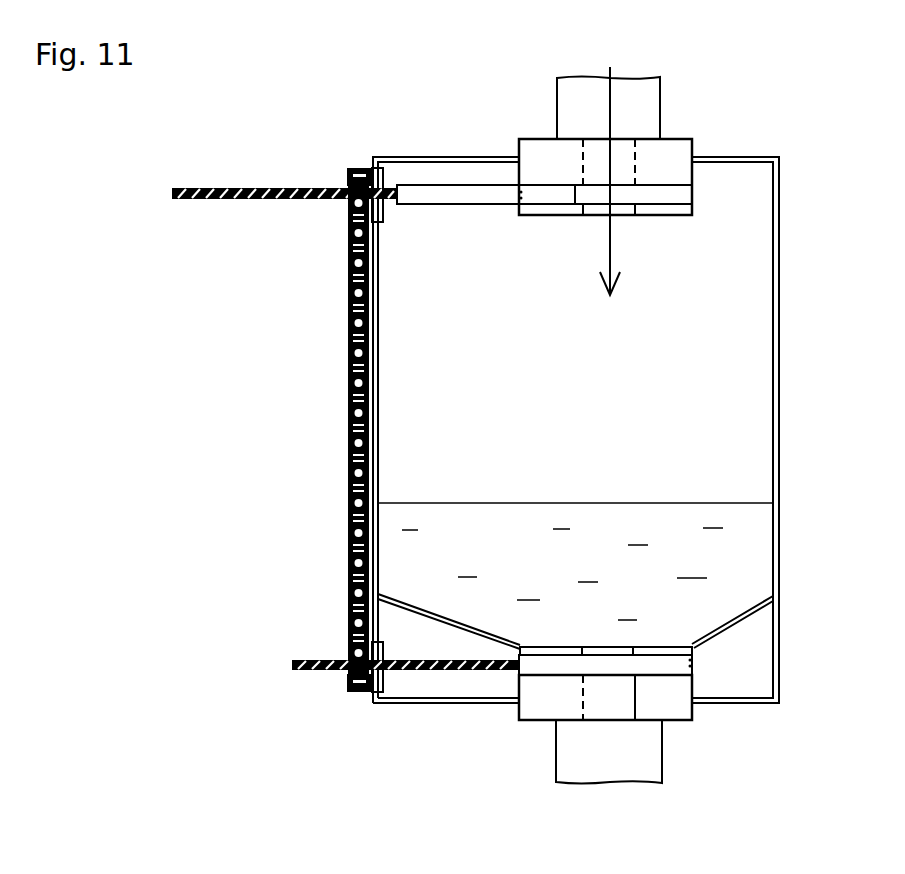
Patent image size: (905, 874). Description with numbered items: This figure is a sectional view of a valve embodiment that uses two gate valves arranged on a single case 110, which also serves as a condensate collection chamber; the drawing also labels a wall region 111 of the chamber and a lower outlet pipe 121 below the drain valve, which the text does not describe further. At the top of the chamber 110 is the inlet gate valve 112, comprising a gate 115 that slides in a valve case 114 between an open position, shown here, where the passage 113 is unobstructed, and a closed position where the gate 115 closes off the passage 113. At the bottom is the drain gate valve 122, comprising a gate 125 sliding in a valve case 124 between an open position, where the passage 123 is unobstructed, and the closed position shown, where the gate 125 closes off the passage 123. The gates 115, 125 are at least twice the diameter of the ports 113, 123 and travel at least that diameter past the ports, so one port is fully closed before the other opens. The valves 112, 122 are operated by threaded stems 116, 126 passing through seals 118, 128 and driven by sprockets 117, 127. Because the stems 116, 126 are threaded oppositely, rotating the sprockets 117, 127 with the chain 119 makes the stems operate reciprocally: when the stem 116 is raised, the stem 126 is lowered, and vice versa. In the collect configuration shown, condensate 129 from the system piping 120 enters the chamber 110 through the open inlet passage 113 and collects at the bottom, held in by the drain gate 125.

The case 110 is at (778, 303).
The tank inner wall 111 is at (762, 443).
The inlet gate valve 112 is at (555, 142).
The passage 113 is at (615, 158).
The valve case 114 is at (685, 193).
The gate 115 is at (483, 195).
The threaded stem 116 is at (275, 188).
The sprocket 117 is at (353, 170).
The seal 118 is at (373, 170).
The chain 119 is at (347, 278).
The system piping 120 is at (590, 97).
The outlet pipe 121 is at (580, 745).
The drain gate valve 122 is at (533, 708).
The passage 123 is at (617, 690).
The valve case 124 is at (692, 655).
The gate 125 is at (672, 665).
The threaded stem 126 is at (312, 672).
The sprocket 127 is at (353, 687).
The seal 128 is at (370, 697).
The condensate 129 is at (760, 577).